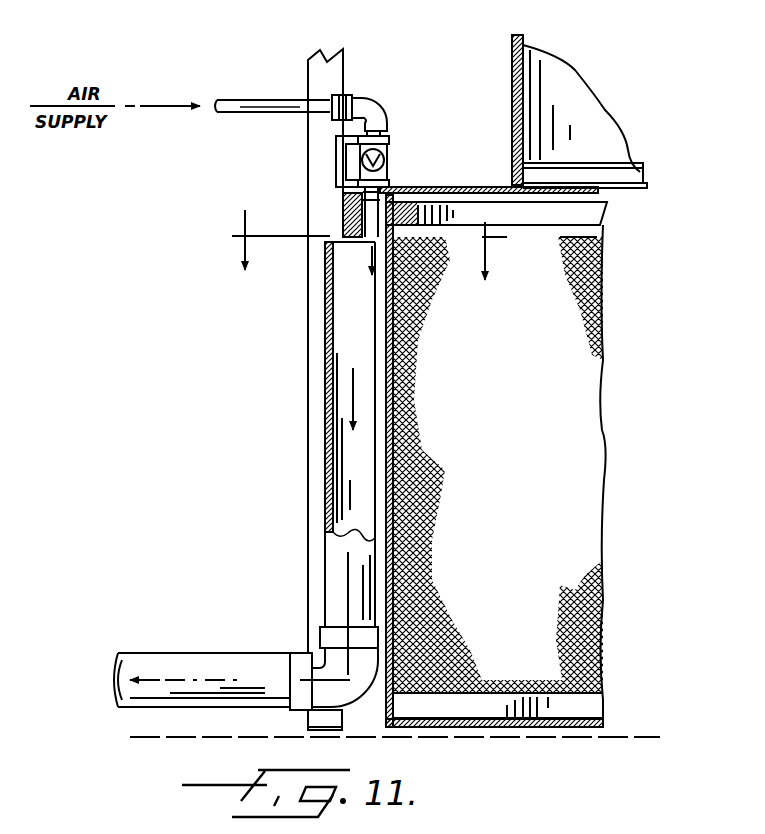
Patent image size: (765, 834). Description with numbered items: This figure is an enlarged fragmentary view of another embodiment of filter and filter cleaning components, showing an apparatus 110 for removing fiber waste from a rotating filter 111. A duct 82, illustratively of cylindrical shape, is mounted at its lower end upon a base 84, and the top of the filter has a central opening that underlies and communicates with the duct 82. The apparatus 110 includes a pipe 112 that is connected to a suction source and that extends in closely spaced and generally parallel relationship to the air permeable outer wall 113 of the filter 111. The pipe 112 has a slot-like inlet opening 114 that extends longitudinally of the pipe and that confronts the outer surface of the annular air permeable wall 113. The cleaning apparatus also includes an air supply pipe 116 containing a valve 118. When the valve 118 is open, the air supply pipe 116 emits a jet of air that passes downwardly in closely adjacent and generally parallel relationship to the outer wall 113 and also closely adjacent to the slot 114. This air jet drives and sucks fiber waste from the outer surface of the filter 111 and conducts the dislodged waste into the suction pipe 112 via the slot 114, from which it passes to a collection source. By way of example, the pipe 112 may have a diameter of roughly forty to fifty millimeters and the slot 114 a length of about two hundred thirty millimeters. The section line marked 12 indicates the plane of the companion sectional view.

The apparatus 110 is at (405, 105).
The air supply pipe 116 is at (255, 100).
The valve 118 is at (385, 160).
The duct 82 is at (577, 85).
The base 84 is at (590, 165).
The pipe 112 is at (326, 380).
The outer wall 113 is at (378, 506).
The slot-like inlet opening 114 is at (368, 362).
The filter 111 is at (600, 332).
The section line 12- 12 is at (387, 245).